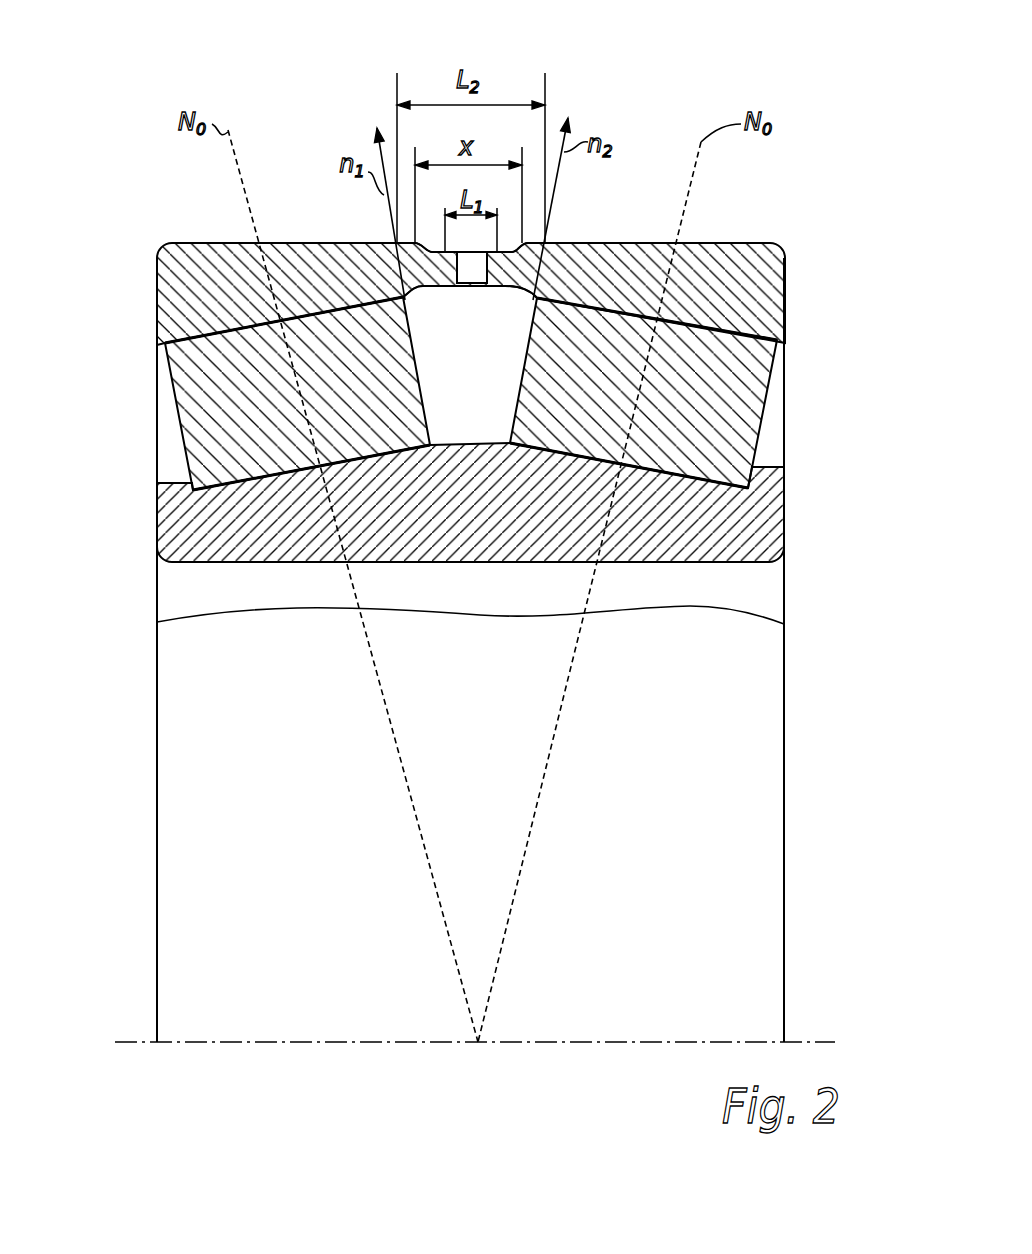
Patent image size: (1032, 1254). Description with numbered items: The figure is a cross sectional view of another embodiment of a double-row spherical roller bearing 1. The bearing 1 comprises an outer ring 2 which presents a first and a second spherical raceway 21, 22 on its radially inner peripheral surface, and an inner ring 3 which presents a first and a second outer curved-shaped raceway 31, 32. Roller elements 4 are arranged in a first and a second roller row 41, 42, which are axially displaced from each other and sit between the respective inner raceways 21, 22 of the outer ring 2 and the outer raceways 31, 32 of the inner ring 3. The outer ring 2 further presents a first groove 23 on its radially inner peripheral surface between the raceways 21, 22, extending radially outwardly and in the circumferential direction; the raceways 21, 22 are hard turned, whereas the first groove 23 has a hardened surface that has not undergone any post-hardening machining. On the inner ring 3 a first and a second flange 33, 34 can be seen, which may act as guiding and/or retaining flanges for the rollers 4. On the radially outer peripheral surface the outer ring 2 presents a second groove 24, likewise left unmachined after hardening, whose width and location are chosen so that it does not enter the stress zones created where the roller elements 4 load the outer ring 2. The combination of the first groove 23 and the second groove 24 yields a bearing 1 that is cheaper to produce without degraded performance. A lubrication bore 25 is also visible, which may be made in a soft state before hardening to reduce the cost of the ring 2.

The double-row spherical roller bearing 1 is at (467, 396).
The outer ring 2 is at (157, 272).
The first spherical raceway 21 is at (307, 314).
The second spherical raceway 22 is at (617, 309).
The first groove 23 is at (420, 291).
The second groove 24 is at (445, 254).
The lubrication bore 25 is at (472, 281).
The inner ring 3 is at (210, 565).
The first outer curved-shaped raceway 31 is at (276, 487).
The second outer curved-shaped raceway 32 is at (676, 487).
The first flange 33 is at (159, 484).
The second flange 34 is at (784, 467).
The roller elements 4 is at (465, 393).
The first roller row 41 is at (175, 420).
The second roller row 42 is at (773, 378).